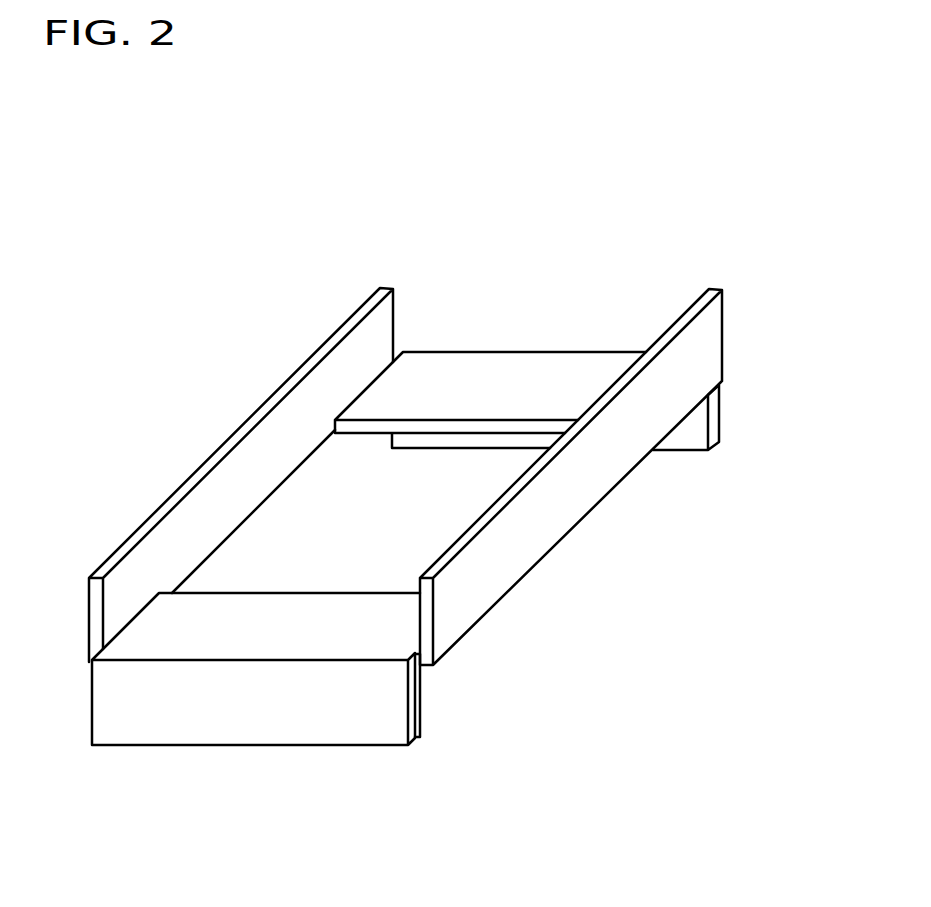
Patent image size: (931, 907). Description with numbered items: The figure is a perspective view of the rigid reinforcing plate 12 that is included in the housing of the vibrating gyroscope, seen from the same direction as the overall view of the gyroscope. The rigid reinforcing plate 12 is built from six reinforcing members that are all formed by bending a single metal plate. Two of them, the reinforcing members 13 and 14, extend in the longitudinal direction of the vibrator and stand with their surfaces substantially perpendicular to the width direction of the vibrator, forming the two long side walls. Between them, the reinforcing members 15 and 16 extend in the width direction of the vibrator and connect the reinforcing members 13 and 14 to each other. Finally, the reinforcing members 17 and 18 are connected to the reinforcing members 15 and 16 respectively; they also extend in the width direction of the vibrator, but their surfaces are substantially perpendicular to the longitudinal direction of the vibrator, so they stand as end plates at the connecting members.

The rigid reinforcing plate 12 is at (90, 287).
The reinforcing member 13 is at (550, 523).
The reinforcing member 14 is at (263, 412).
The reinforcing member 15 is at (520, 380).
The reinforcing member 16 is at (225, 622).
The reinforcing member 17 is at (685, 438).
The reinforcing member 18 is at (412, 708).